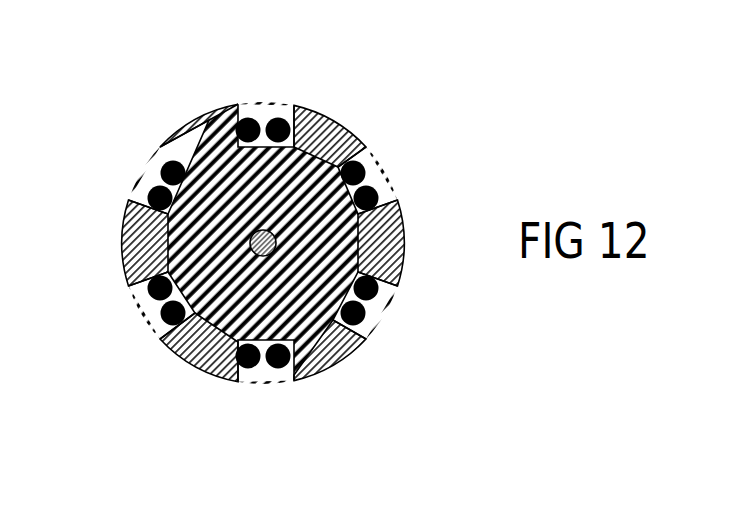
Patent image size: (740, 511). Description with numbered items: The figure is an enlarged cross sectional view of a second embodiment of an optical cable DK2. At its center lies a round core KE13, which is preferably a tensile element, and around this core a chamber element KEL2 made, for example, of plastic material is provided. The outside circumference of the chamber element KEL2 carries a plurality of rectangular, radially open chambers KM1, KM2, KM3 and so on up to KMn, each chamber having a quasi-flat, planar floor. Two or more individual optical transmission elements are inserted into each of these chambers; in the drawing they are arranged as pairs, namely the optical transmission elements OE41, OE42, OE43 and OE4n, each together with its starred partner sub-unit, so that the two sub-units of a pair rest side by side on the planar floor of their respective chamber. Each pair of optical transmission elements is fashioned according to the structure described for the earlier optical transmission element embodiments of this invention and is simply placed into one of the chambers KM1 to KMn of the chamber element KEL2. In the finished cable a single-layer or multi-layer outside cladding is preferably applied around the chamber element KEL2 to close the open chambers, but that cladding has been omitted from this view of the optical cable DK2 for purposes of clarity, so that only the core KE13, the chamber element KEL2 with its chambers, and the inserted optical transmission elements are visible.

The optical cable DK2 is at (445, 287).
The chamber element KEL2 is at (325, 356).
The chamber KM1 is at (157, 156).
The chamber KM2 is at (236, 105).
The chamber KM3 is at (382, 205).
The chamber KMn is at (146, 290).
The optical transmission element OE41 is at (147, 194).
The optical transmission element OE42 is at (248, 117).
The optical transmission element OE43 is at (360, 163).
The optical transmission element OE4n is at (149, 296).
The round core KE13 is at (280, 251).